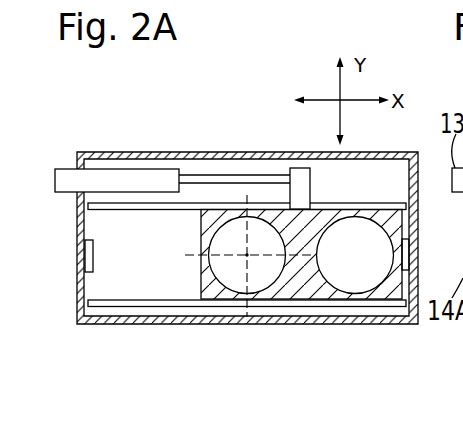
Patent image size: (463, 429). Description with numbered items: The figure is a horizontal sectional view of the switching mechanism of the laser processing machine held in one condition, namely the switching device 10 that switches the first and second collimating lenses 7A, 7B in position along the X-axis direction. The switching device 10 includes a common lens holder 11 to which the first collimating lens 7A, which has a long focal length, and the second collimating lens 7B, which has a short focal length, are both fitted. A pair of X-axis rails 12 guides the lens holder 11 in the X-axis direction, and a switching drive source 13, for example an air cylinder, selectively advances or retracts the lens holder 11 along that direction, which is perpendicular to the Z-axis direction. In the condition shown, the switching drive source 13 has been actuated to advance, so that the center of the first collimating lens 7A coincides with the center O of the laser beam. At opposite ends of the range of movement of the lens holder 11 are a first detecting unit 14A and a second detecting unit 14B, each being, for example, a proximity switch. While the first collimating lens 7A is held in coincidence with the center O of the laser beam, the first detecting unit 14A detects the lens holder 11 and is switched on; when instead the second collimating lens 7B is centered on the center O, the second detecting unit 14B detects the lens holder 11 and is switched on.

The switching device 10 is at (222, 136).
The switching drive source 13 is at (63, 168).
The X-axis rails 12 is at (105, 211).
The first detecting unit 14A is at (86, 257).
The second detecting unit 14B is at (406, 260).
The lens holder 11 is at (300, 280).
The first collimating lens 7A is at (258, 282).
The second collimating lens 7B is at (350, 285).
The center of the laser beam O is at (247, 255).